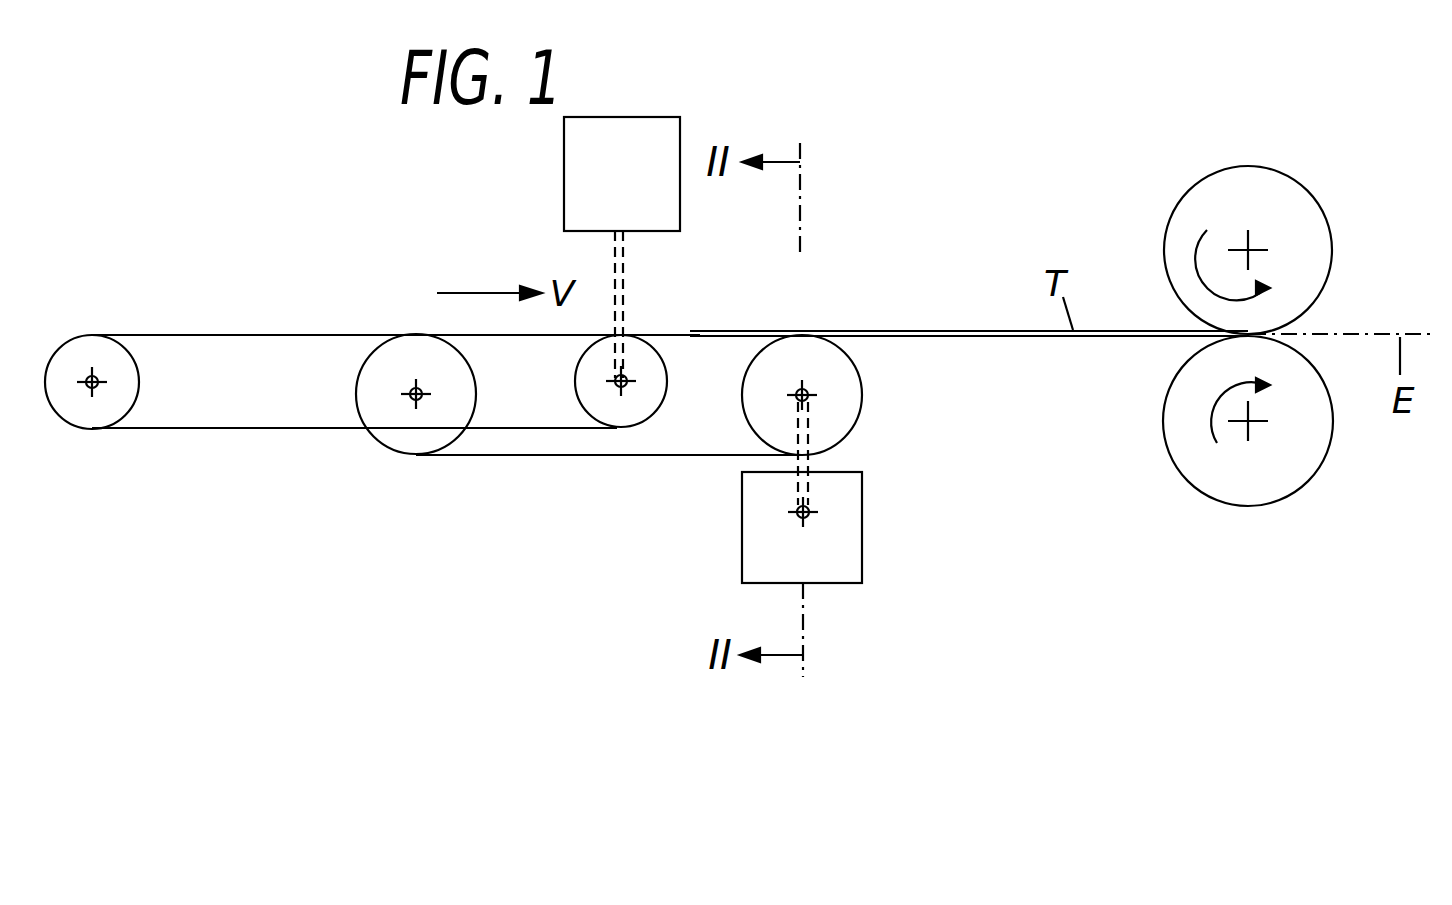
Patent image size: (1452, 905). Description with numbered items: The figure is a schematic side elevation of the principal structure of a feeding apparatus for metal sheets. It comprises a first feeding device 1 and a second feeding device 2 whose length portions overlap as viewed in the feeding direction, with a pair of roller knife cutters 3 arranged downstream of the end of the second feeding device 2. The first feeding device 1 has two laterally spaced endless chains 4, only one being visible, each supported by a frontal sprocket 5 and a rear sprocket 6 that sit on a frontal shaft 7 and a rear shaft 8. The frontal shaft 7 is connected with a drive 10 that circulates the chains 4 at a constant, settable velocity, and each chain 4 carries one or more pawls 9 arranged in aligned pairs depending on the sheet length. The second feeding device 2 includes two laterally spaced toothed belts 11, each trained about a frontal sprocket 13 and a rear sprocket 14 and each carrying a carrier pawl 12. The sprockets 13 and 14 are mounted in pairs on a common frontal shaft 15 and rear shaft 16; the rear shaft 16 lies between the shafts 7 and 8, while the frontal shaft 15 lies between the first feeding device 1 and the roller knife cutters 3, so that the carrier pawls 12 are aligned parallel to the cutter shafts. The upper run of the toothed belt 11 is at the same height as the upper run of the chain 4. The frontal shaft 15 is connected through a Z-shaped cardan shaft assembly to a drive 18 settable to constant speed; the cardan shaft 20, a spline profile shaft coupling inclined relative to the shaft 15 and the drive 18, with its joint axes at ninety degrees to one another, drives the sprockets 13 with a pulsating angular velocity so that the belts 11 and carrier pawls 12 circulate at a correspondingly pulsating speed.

The first feeding device 1 is at (155, 455).
The second feeding device 2 is at (472, 472).
The roller knife cutters 3 is at (1318, 250).
The endless chain 4 is at (238, 431).
The frontal sprocket 5 is at (593, 398).
The rear sprocket 6 is at (80, 410).
The frontal shaft 7 is at (640, 392).
The rear shaft 8 is at (107, 382).
The pawl 9 is at (290, 332).
The drive 10 is at (585, 165).
The toothed belt 11 is at (645, 457).
The carrier pawl 12 is at (708, 333).
The frontal sprocket 13 is at (848, 405).
The rear sprocket 14 is at (368, 388).
The frontal shaft 15 is at (810, 388).
The rear shaft 16 is at (413, 392).
The drive 18 is at (848, 553).
The cardan shaft 20 is at (808, 487).